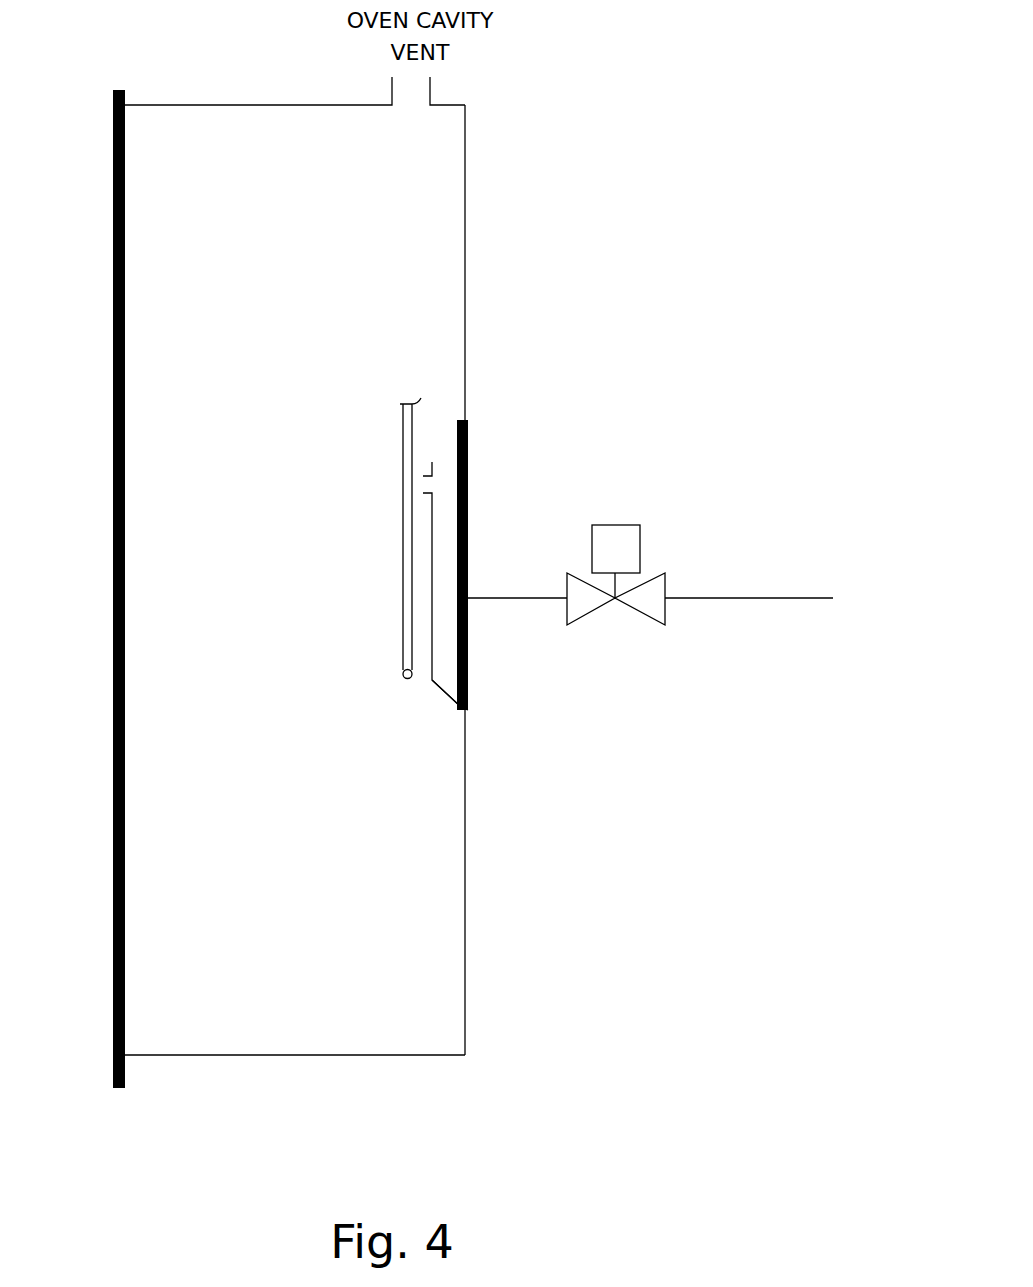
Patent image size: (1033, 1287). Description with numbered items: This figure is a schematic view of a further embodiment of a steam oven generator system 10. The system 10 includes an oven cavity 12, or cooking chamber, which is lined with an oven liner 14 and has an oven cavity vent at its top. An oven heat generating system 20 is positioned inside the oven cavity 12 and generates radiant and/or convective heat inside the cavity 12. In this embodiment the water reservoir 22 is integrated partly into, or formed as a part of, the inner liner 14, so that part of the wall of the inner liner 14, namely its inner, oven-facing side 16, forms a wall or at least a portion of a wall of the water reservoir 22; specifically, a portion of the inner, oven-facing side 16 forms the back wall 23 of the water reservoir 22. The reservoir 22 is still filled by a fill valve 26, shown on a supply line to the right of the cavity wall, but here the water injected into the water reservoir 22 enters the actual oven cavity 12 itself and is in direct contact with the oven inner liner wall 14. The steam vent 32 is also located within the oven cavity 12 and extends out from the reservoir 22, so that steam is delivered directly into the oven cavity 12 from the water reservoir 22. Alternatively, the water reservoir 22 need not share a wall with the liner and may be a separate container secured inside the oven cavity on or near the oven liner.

The steam oven generator system 10 is at (667, 105).
The oven cavity 12 is at (291, 761).
The oven liner 14 is at (432, 462).
The inner, oven-facing side 16 is at (465, 283).
The oven heat generating system 20 is at (403, 534).
The water reservoir 22 is at (452, 548).
The back wall 23 is at (468, 683).
The fill valve 26 is at (616, 605).
The steam vent 32 is at (430, 485).